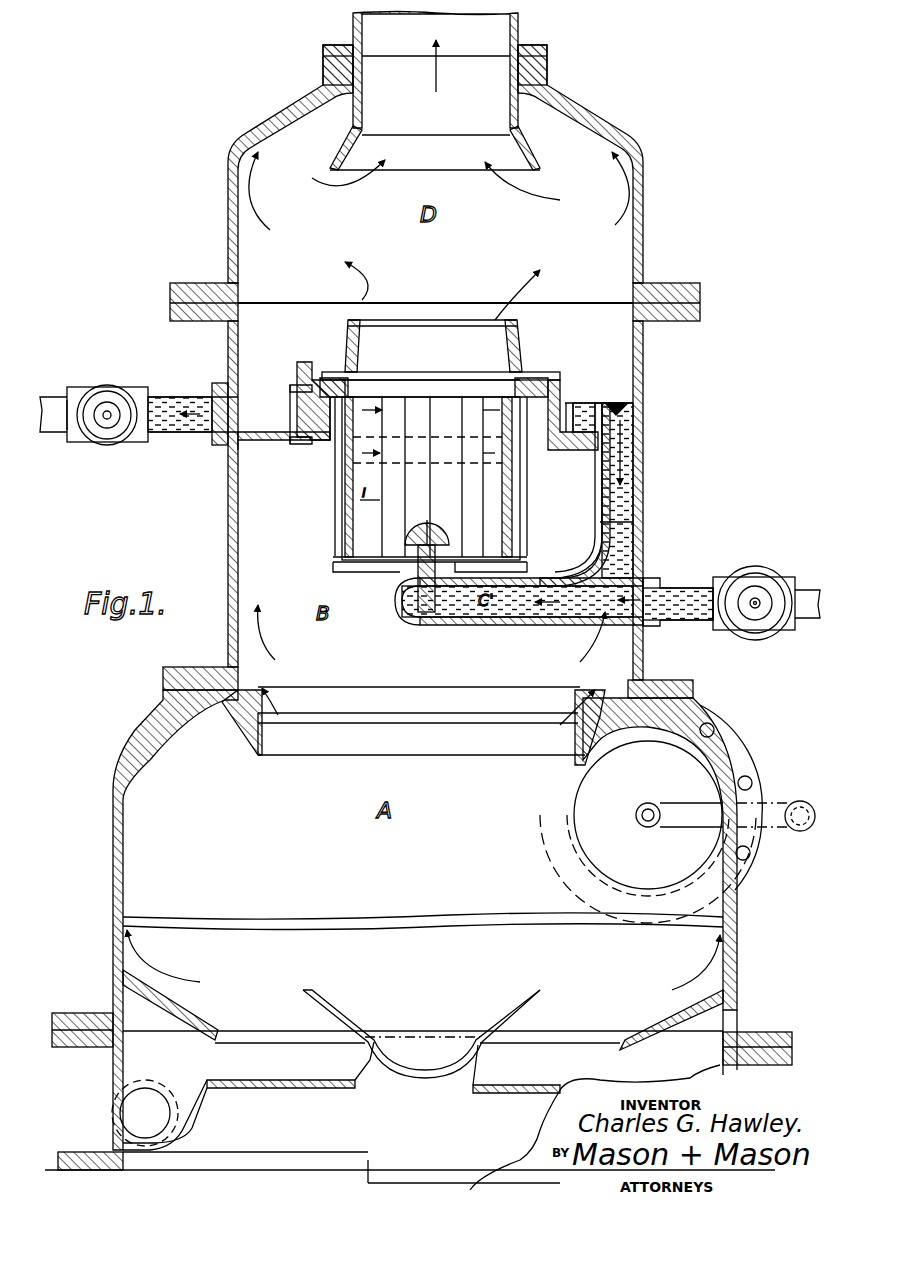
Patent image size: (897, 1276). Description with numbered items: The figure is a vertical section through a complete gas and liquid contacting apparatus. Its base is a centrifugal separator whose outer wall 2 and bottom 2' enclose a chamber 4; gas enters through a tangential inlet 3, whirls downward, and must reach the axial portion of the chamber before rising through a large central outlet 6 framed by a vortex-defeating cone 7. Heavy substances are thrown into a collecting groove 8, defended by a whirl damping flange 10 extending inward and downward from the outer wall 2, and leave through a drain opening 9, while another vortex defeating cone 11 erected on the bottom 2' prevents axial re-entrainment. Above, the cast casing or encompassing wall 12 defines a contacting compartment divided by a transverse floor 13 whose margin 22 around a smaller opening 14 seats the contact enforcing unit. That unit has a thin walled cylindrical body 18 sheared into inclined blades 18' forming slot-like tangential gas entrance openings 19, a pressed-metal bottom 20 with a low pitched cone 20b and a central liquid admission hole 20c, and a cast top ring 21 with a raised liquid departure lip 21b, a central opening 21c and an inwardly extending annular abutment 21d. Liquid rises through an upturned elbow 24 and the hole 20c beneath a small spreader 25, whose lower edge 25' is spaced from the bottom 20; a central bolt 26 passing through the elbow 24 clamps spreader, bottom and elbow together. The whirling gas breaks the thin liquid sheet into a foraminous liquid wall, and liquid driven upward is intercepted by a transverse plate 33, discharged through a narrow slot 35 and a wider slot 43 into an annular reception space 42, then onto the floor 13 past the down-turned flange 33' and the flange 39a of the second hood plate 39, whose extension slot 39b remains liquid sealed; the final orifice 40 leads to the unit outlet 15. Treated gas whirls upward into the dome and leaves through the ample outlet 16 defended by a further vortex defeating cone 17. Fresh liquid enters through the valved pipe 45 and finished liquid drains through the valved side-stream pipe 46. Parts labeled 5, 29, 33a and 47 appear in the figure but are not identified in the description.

The outer wall 2 is at (429, 888).
The bottom 2' is at (566, 1042).
The tangential entrance or inlet 3 is at (578, 803).
The chamber 4 is at (423, 705).
The shaft 5 is at (655, 778).
The central outlet 6 is at (421, 721).
The vortex-defeating cone 7 is at (255, 732).
The collecting groove 8 is at (422, 1048).
The drain opening 9 is at (410, 1112).
The whirl damping flange 10 is at (215, 1028).
The vortex defeating cone 11 is at (372, 1000).
The encompassing wall 12 is at (228, 362).
The transverse floor 13 is at (270, 445).
The smaller opening 14 is at (320, 390).
The outlet orifice 15 is at (455, 443).
The outlet 16 is at (435, 74).
The vortex defeating cone 17 is at (540, 152).
The body portion 18 is at (444, 484).
The blades 18' is at (556, 517).
The tangential gas entrance openings 19 is at (340, 508).
The bottom 20 is at (395, 590).
The low pitched cone 20b is at (458, 548).
The central liquid admission hole 20c is at (398, 612).
The top member 21 is at (522, 375).
The liquid departure lip 21b is at (410, 376).
The central opening 21c is at (445, 389).
The annular abutment 21d is at (399, 389).
The margin 22 is at (548, 392).
The upturned elbow 24 is at (380, 580).
The spreader 25 is at (427, 563).
The lower edge 25' is at (398, 531).
The central bolt 26 is at (435, 624).
The connection 29 is at (295, 448).
The transverse ring or plate 33 is at (532, 349).
The down-turned flange 33' is at (574, 413).
The bracket flange 33a is at (570, 405).
The annular space or slot 35 is at (452, 378).
The second hood plate 39 is at (510, 328).
The downturned flange 39a is at (300, 398).
The extension slot 39b is at (284, 380).
The final orifice 40 is at (405, 328).
The annular liquid reception space 42 is at (320, 380).
The liquid discharge slot 43 is at (433, 341).
The valved pipe 45 is at (731, 603).
The valved side-stream pipe 46 is at (139, 414).
The liquid level 47 is at (616, 517).